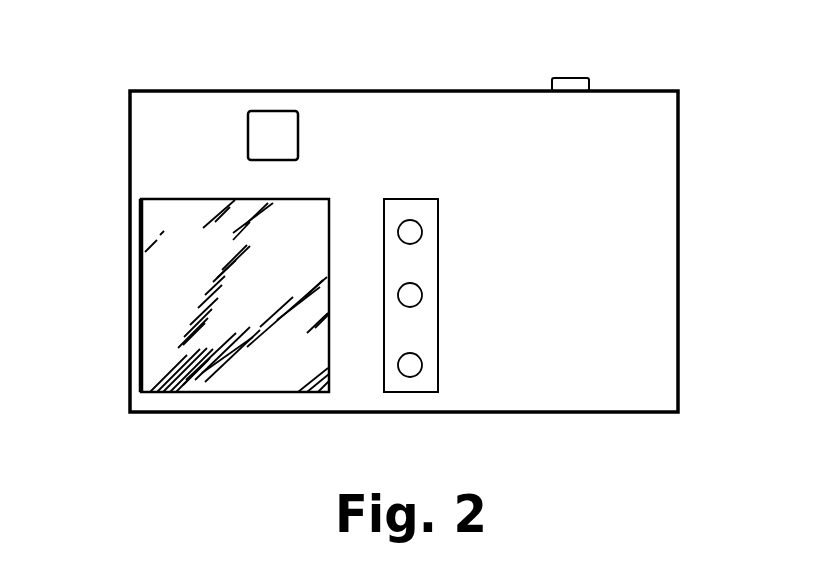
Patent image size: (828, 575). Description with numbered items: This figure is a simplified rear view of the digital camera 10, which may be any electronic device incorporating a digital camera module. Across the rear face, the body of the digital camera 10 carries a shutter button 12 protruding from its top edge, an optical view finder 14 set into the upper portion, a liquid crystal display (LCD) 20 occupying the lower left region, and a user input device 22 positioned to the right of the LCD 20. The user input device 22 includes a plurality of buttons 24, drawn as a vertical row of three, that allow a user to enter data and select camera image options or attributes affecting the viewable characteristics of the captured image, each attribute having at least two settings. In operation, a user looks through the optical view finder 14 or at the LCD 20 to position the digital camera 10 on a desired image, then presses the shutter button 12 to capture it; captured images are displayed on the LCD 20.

The digital camera 10 is at (176, 60).
The shutter button 12 is at (572, 78).
The optical view finder 14 is at (272, 111).
The liquid crystal display (LCD) 20 is at (141, 290).
The user input device 22 is at (411, 184).
The buttons 24 is at (422, 232).